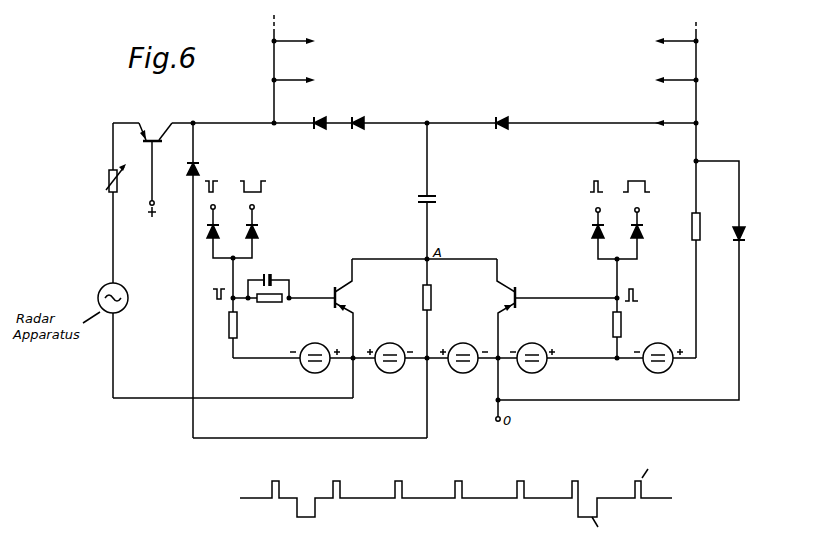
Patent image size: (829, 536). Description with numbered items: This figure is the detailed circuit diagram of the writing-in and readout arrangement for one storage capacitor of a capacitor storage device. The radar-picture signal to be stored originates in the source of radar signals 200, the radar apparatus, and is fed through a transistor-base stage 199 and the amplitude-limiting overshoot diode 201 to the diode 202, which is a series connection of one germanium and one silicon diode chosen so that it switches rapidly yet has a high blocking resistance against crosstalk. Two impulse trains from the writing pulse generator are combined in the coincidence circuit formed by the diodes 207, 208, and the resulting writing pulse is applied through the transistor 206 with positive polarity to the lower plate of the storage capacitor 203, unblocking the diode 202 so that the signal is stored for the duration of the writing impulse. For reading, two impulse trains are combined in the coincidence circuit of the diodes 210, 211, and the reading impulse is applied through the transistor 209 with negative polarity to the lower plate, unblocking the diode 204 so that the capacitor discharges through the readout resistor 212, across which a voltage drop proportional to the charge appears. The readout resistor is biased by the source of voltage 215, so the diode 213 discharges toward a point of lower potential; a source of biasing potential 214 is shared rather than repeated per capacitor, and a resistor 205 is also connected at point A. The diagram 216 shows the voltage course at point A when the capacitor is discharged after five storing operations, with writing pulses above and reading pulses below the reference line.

The transistor-base stage 199 is at (155, 161).
The source of radar signals 200 is at (128, 298).
The overshoot diode 201 is at (209, 280).
The diode 202 is at (341, 127).
The storage capacitor 203 is at (442, 191).
The diode 204 is at (498, 127).
The resistor 205 is at (440, 348).
The transistor 206 is at (321, 328).
The diode 207 is at (224, 219).
The diode 208 is at (257, 219).
The transistor 209 is at (557, 308).
The diode 210 is at (592, 220).
The diode 211 is at (642, 220).
The readout resistor 212 is at (685, 226).
The diode 213 is at (728, 235).
The source of biasing potential 214 is at (532, 369).
The source of voltage 215 is at (658, 369).
The diagram 216 is at (451, 498).